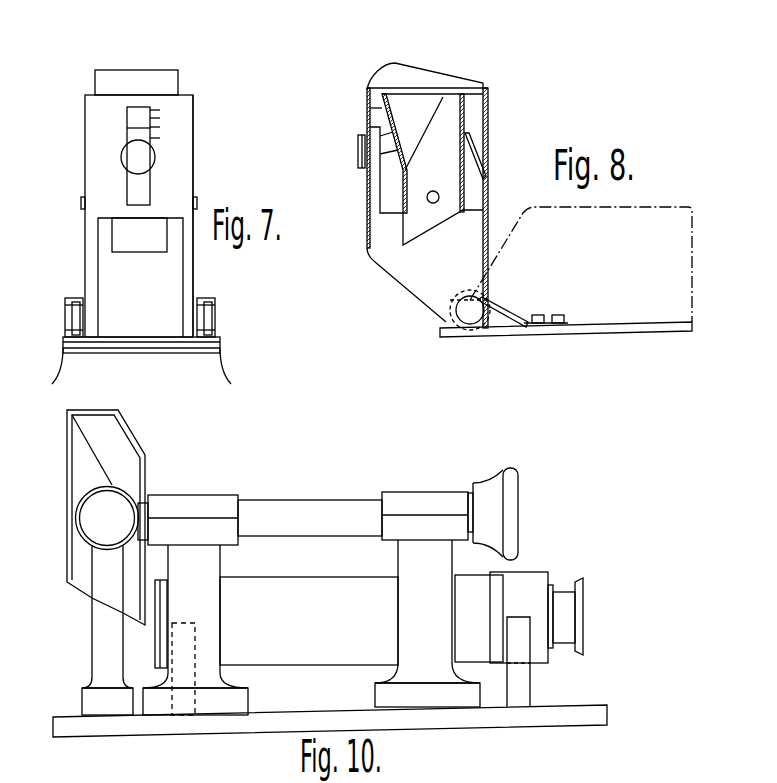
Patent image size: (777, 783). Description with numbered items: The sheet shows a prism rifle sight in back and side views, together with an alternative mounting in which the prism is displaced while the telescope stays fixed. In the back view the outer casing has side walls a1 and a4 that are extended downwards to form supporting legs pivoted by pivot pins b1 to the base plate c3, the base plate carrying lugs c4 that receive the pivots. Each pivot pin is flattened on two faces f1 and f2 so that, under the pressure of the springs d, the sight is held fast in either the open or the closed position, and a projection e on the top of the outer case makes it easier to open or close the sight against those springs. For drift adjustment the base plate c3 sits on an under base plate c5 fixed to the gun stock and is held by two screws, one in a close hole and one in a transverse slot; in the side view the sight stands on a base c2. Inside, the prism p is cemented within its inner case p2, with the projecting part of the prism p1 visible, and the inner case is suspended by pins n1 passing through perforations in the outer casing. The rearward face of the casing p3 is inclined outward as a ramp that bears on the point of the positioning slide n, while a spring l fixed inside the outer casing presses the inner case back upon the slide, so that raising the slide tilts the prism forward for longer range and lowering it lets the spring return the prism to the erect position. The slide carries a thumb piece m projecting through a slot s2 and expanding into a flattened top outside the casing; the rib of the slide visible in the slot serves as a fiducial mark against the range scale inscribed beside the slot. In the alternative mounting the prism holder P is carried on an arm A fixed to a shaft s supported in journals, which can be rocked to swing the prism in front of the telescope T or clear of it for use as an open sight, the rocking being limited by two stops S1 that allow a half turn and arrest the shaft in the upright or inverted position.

In FIG. 7, the projection e is at (121, 80).
In FIG. 8, the projection e is at (417, 78).
In FIG. 7, the side wall of the outer casing a1 is at (85, 109).
In FIG. 7, the side wall of the outer casing a4 is at (193, 109).
In FIG. 7, the thumb piece m is at (136, 157).
In FIG. 8, the thumb piece m is at (358, 152).
In FIG. 7, the slot s2 is at (146, 185).
In FIG. 7, the pin n1 is at (81, 205).
In FIG. 8, the pin n1 is at (440, 196).
In FIG. 7, the projecting part of the prism p1 is at (142, 238).
In FIG. 8, the projecting part of the prism p1 is at (411, 228).
In FIG. 7, the spring d is at (70, 298).
In FIG. 8, the spring d is at (522, 322).
In FIG. 7, the pivot pin b1 is at (72, 315).
In FIG. 8, the pivot pin b1 is at (465, 314).
In FIG. 7, the base plate c3 is at (122, 344).
In FIG. 7, the lug c4 is at (70, 338).
In FIG. 7, the under base plate c5 is at (181, 349).
In FIG. 8, the prism p is at (427, 208).
In FIG. 8, the inner case p2 is at (466, 110).
In FIG. 8, the rearward face of the casing p3 is at (381, 108).
In FIG. 8, the positioning slide n is at (372, 128).
In FIG. 8, the spring l is at (480, 152).
In FIG. 8, the flattened face of the pivot f1 is at (452, 305).
In FIG. 8, the flattened face of the pivot f2 is at (486, 297).
In FIG. 8, the base plate c2 is at (621, 322).
In FIG. 10, the prism holder P is at (67, 492).
In FIG. 10, the arm A is at (95, 522).
In FIG. 10, the stop S1 is at (110, 556).
In FIG. 10, the shaft s is at (292, 515).
In FIG. 10, the telescope T is at (512, 592).